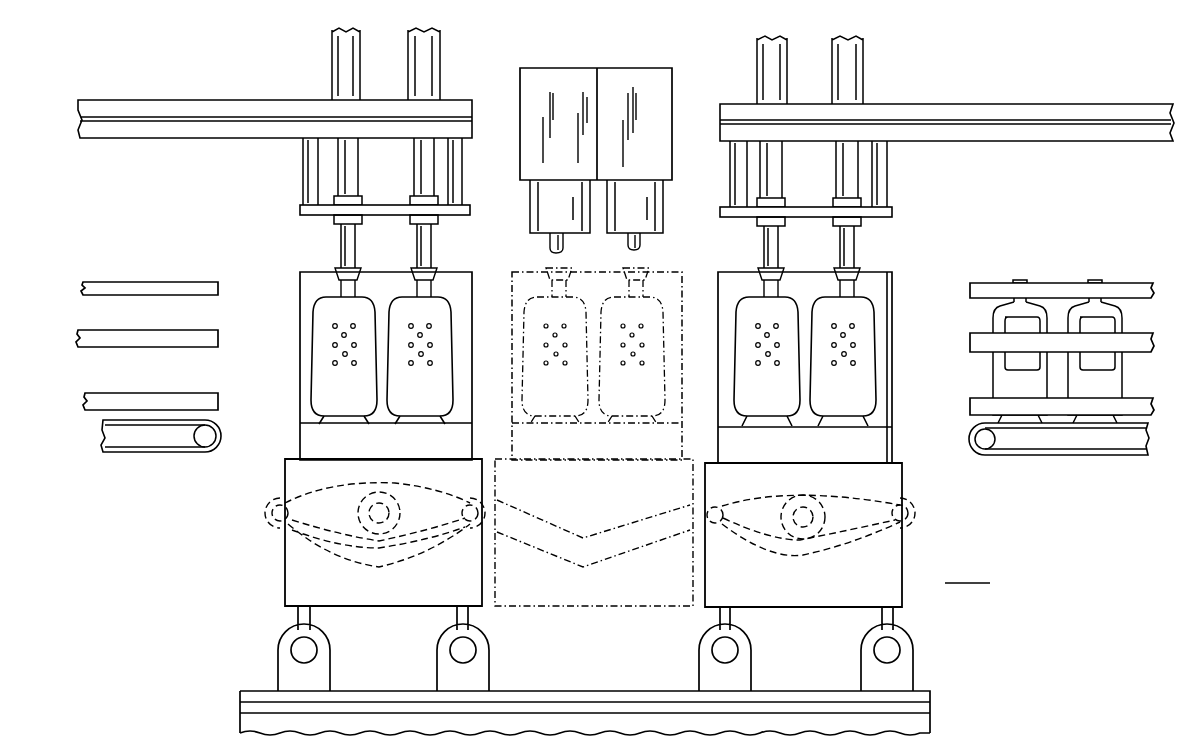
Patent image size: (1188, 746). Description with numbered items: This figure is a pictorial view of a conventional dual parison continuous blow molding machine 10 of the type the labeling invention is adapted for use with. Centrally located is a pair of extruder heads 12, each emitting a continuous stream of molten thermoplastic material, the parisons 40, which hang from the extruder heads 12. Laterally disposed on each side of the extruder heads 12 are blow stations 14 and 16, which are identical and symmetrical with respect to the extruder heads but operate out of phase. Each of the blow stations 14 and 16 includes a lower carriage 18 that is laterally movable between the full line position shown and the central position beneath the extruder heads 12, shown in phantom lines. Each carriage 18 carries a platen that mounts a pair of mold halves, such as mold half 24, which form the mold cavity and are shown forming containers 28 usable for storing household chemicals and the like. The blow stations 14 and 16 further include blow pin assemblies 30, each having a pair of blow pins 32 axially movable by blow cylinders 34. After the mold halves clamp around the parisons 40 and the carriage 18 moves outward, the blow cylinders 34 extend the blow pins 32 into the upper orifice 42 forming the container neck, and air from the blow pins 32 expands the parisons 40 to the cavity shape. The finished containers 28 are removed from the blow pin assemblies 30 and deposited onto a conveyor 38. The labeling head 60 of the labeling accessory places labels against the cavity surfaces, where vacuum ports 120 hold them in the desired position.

The dual parison continuous blow molding machine 10 is at (884, 92).
The extruder heads 12 is at (530, 211).
The blow station 14 is at (982, 103).
The blow station 16 is at (252, 100).
The lower carriage 18 is at (285, 474).
The mold half 24 is at (313, 270).
The container 28 is at (1118, 312).
The blow pin assembly 30 is at (300, 181).
The blow pin 32 is at (432, 237).
The blow cylinder 34 is at (442, 73).
The conveyor 38 is at (167, 453).
The parison 40 is at (640, 247).
The upper orifice 42 is at (548, 276).
The labeling head 60 is at (896, 387).
The vacuum ports 120 is at (855, 345).